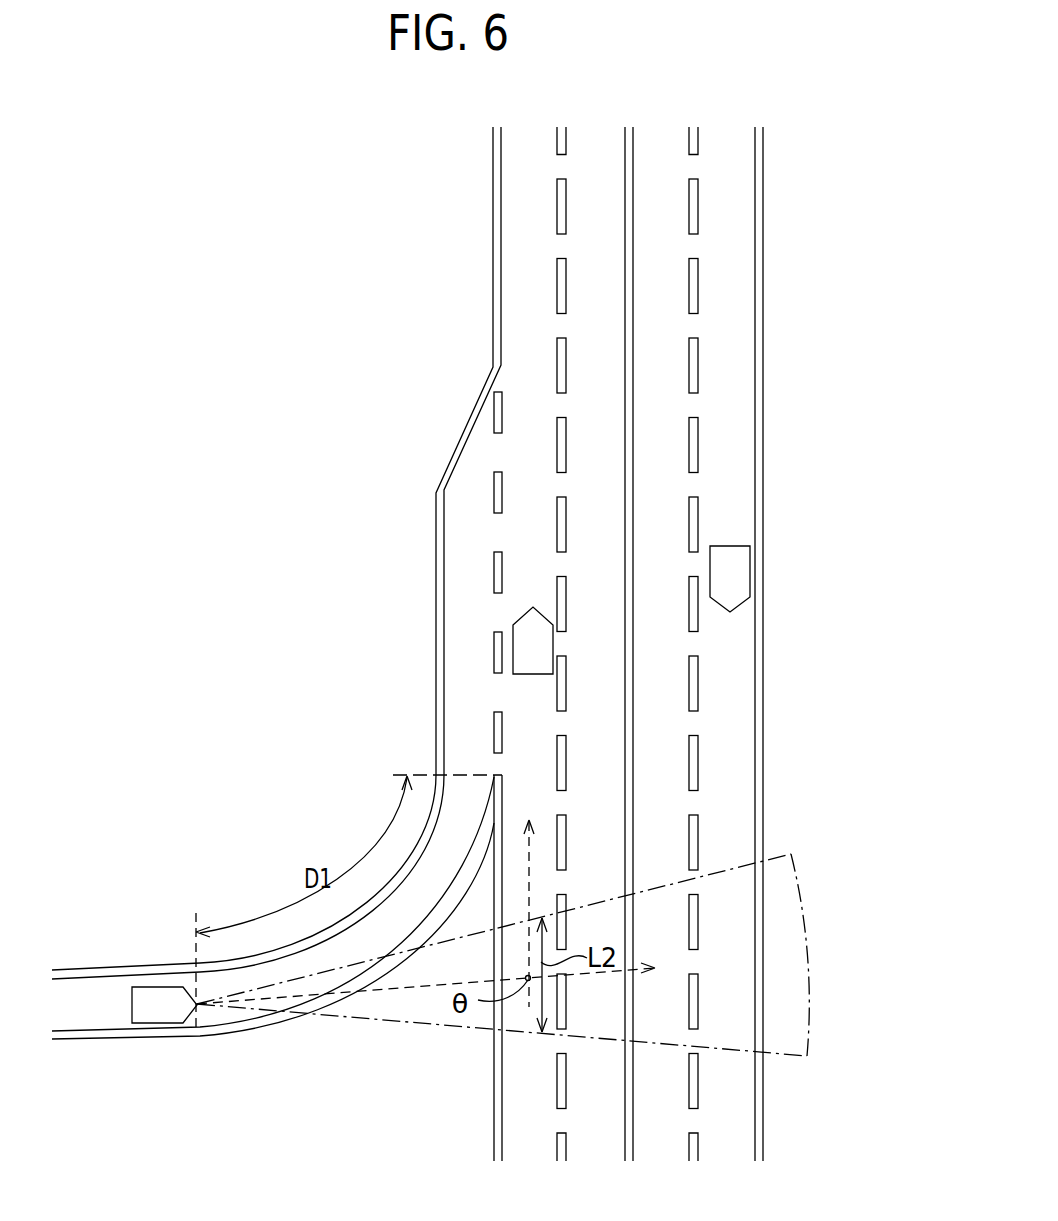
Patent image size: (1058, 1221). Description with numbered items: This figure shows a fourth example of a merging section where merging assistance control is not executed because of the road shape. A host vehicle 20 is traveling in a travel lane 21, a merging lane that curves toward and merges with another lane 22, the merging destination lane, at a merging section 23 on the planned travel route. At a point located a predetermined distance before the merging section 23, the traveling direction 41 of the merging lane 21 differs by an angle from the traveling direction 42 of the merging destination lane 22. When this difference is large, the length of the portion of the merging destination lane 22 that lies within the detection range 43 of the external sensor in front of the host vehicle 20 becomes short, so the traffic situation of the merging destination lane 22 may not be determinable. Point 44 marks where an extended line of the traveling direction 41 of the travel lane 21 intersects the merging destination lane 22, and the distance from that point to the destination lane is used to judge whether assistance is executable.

The host vehicle 20 is at (160, 1010).
The travel lane 21 is at (102, 1000).
The other lane 22 is at (528, 1128).
The merging section 23 is at (401, 408).
The traveling direction of the merging lane 41 is at (388, 990).
The traveling direction of the merging destination lane 42 is at (531, 877).
The detection range 43 is at (808, 930).
The intersection point 44 is at (528, 978).